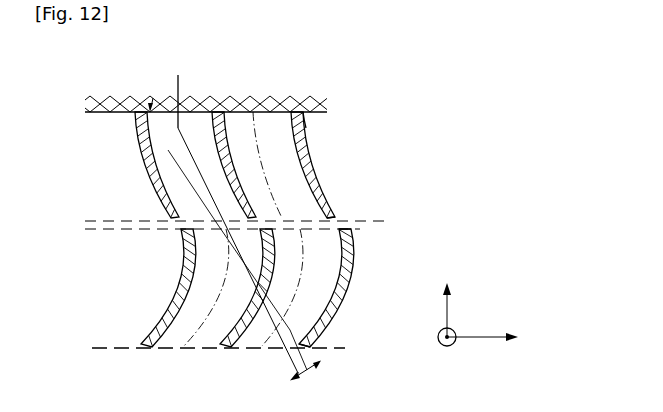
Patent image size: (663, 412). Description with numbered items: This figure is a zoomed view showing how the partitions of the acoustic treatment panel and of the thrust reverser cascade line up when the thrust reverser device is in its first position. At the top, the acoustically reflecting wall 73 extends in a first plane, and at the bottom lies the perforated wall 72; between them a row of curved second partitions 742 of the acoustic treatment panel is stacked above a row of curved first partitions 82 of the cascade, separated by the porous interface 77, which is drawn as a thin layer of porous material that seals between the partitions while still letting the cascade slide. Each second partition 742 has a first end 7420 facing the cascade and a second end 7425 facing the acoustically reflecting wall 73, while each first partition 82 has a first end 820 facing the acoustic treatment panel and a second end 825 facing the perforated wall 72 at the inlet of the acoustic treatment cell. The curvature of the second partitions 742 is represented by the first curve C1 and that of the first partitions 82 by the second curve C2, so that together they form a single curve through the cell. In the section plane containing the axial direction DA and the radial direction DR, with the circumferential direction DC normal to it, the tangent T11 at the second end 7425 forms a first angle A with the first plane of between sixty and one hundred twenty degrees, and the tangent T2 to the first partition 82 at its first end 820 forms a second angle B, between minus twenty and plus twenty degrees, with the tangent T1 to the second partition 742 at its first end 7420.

The acoustically reflecting wall 73 is at (92, 103).
The second partition 742 is at (145, 165).
The second end of the second partition 7425 is at (303, 116).
The first end of the second partition 7420 is at (338, 219).
The porous interface 77 is at (217, 224).
The first partition 82 is at (184, 275).
The first end of the first partition 820 is at (347, 230).
The second end of the first partition 825 is at (309, 346).
The perforated wall 72 is at (97, 350).
The first curve C1 is at (272, 180).
The second curve C2 is at (303, 282).
The first angle A is at (177, 83).
The second angle B is at (307, 382).
The tangent to the second partition at the first end T1 is at (293, 363).
The tangent to the first partition at its first end T2 is at (320, 361).
The tangent to the second partition at the second end T11 is at (180, 86).
The radial direction DR is at (443, 297).
The axial direction DA is at (482, 347).
The circumferential direction DC is at (444, 347).